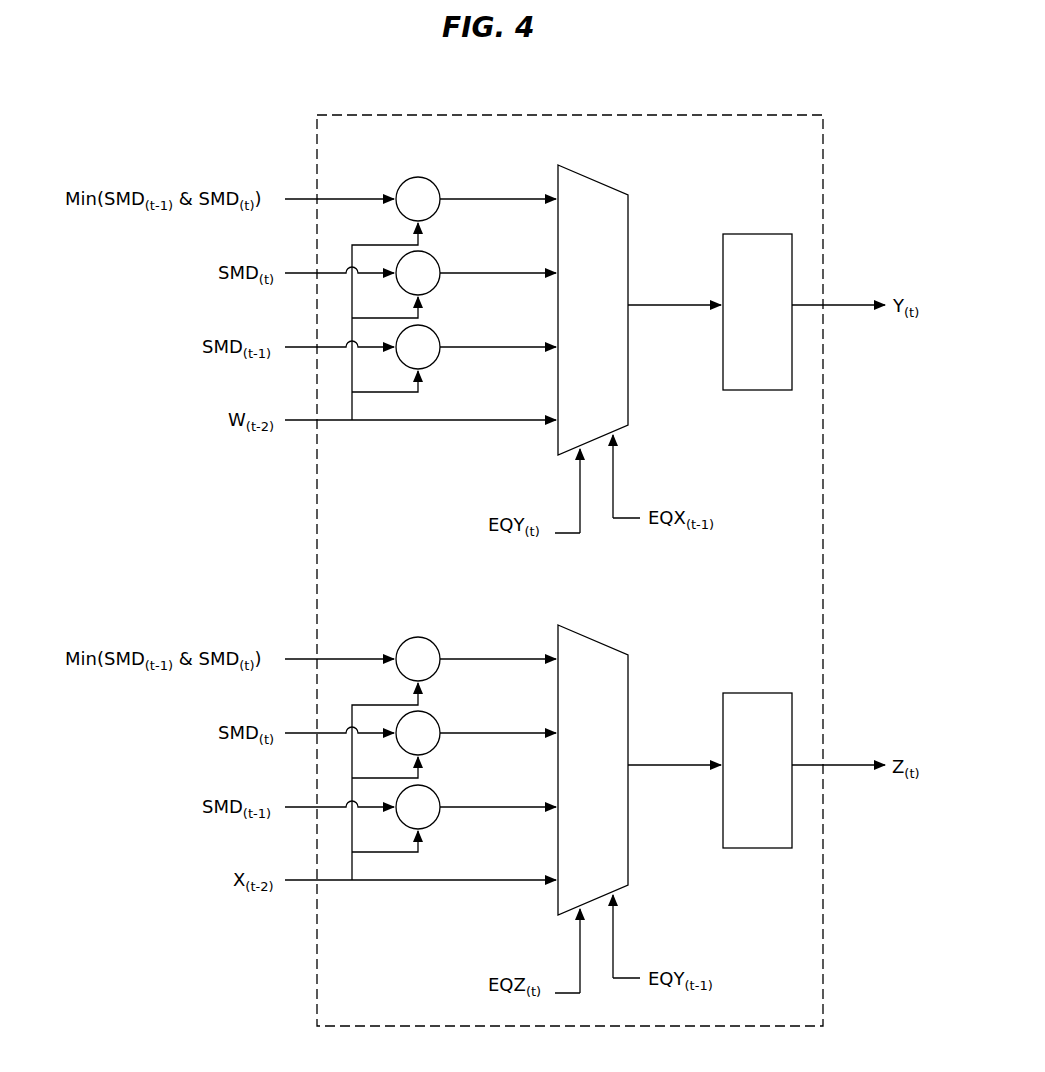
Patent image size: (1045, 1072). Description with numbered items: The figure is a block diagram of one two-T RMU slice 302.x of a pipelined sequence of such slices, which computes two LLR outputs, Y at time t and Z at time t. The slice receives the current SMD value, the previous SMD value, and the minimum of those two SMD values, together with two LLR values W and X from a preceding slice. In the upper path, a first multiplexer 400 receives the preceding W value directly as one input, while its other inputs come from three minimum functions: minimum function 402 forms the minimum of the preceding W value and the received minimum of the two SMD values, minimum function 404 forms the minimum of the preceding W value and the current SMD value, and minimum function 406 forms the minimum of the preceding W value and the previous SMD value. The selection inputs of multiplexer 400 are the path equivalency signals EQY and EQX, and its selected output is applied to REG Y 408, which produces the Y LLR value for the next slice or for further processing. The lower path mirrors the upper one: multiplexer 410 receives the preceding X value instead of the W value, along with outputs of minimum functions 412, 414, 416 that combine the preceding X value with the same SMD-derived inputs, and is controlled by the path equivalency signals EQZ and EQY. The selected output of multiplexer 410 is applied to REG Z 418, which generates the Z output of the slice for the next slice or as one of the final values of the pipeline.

The 2T RMU slice 302.x is at (720, 115).
The first multiplexer 400 is at (629, 212).
The minimum function 402 is at (435, 213).
The minimum function 404 is at (435, 287).
The minimum function 406 is at (435, 361).
The REG Y 408 is at (770, 234).
The multiplexer 410 is at (629, 672).
The minimum function 412 is at (435, 673).
The minimum function 414 is at (435, 747).
The minimum function 416 is at (435, 821).
The REG Z 418 is at (770, 693).